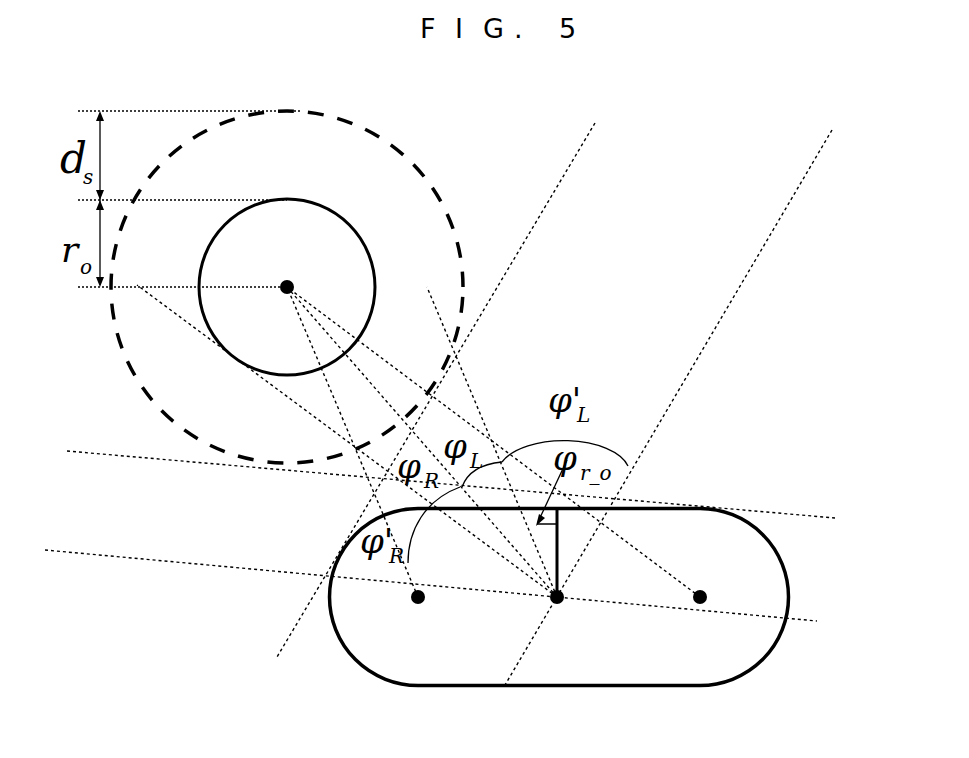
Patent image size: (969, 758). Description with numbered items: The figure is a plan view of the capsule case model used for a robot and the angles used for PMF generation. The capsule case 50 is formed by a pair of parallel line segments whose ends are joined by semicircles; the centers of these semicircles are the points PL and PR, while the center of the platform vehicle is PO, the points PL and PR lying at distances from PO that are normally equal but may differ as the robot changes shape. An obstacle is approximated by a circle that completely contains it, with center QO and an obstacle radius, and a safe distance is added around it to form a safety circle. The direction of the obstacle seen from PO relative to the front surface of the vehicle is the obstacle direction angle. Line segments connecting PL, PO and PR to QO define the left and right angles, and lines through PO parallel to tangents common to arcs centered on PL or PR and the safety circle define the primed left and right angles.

The capsule case 50 is at (493, 612).
The center of the left semicircle PL is at (436, 625).
The center of the platform vehicle PO is at (577, 625).
The center of the right semicircle PR is at (721, 625).
The center of the obstacle QO is at (287, 287).